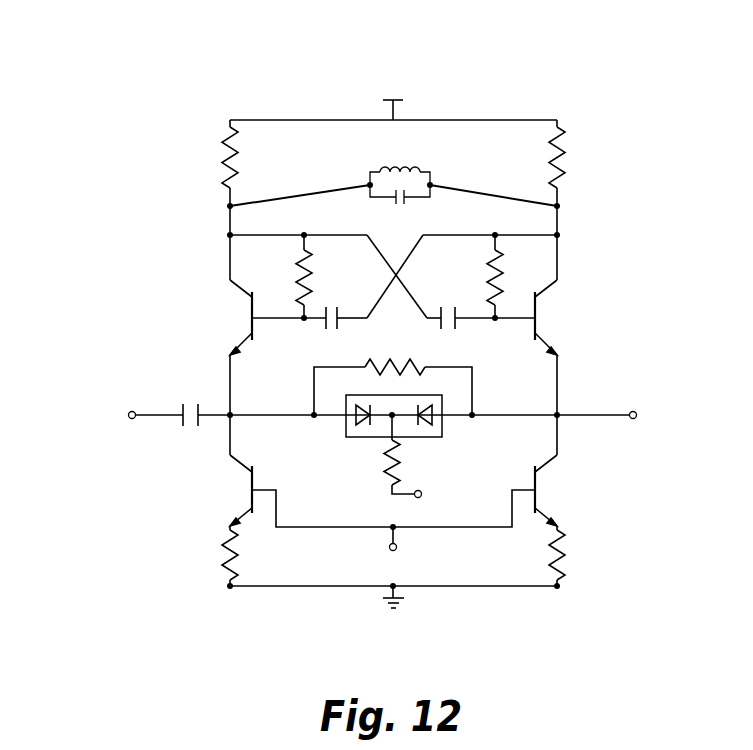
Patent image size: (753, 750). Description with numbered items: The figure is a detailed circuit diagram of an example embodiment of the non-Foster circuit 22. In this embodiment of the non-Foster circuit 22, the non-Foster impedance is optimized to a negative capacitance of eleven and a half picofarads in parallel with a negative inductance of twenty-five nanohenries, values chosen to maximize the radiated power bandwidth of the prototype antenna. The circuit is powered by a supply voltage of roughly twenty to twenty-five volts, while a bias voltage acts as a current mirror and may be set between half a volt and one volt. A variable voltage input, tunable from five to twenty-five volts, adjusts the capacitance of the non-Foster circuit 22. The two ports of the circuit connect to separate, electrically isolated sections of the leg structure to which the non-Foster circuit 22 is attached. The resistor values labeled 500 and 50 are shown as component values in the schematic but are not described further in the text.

The non-Foster circuit 22 is at (91, 59).
The 500 ohm load resistor 500 is at (396, 154).
The 50 ohm emitter resistor 50 is at (393, 558).